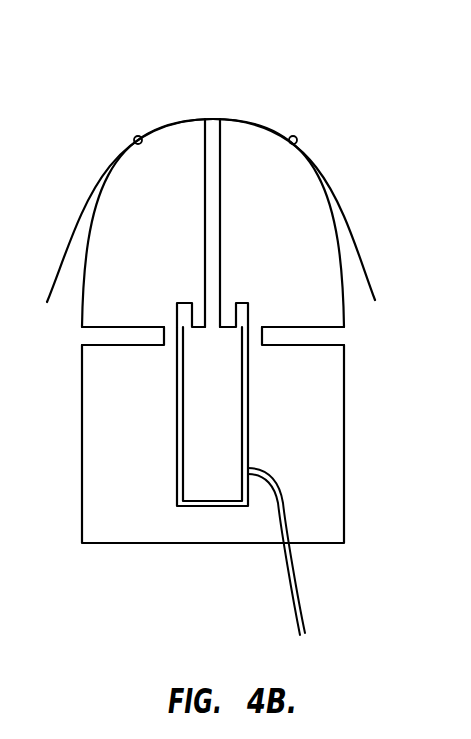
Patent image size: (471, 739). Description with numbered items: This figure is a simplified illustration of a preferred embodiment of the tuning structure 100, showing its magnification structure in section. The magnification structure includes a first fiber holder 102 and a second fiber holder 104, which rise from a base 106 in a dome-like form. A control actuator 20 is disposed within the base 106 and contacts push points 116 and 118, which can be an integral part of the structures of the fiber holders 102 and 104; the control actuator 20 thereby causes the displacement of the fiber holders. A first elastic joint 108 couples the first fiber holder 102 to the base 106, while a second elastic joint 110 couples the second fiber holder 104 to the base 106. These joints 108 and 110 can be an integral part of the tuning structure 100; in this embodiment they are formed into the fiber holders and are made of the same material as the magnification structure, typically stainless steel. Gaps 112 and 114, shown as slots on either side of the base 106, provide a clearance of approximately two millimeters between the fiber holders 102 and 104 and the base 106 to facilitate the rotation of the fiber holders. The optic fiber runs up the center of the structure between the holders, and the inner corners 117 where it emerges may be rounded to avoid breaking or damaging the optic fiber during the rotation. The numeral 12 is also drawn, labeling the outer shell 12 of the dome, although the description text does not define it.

The tuning structure 100 is at (140, 62).
The dome housing 12 is at (328, 183).
The first fiber holder 102 is at (132, 278).
The second fiber holder 104 is at (310, 273).
The base 106 is at (328, 458).
The first elastic joint 108 is at (170, 337).
The second elastic joint 110 is at (257, 335).
The gap 112 is at (88, 337).
The gap 114 is at (337, 333).
The push point 116 is at (233, 300).
The inner corners 117 is at (205, 120).
The push point 118 is at (198, 302).
The control actuator 20 is at (250, 392).